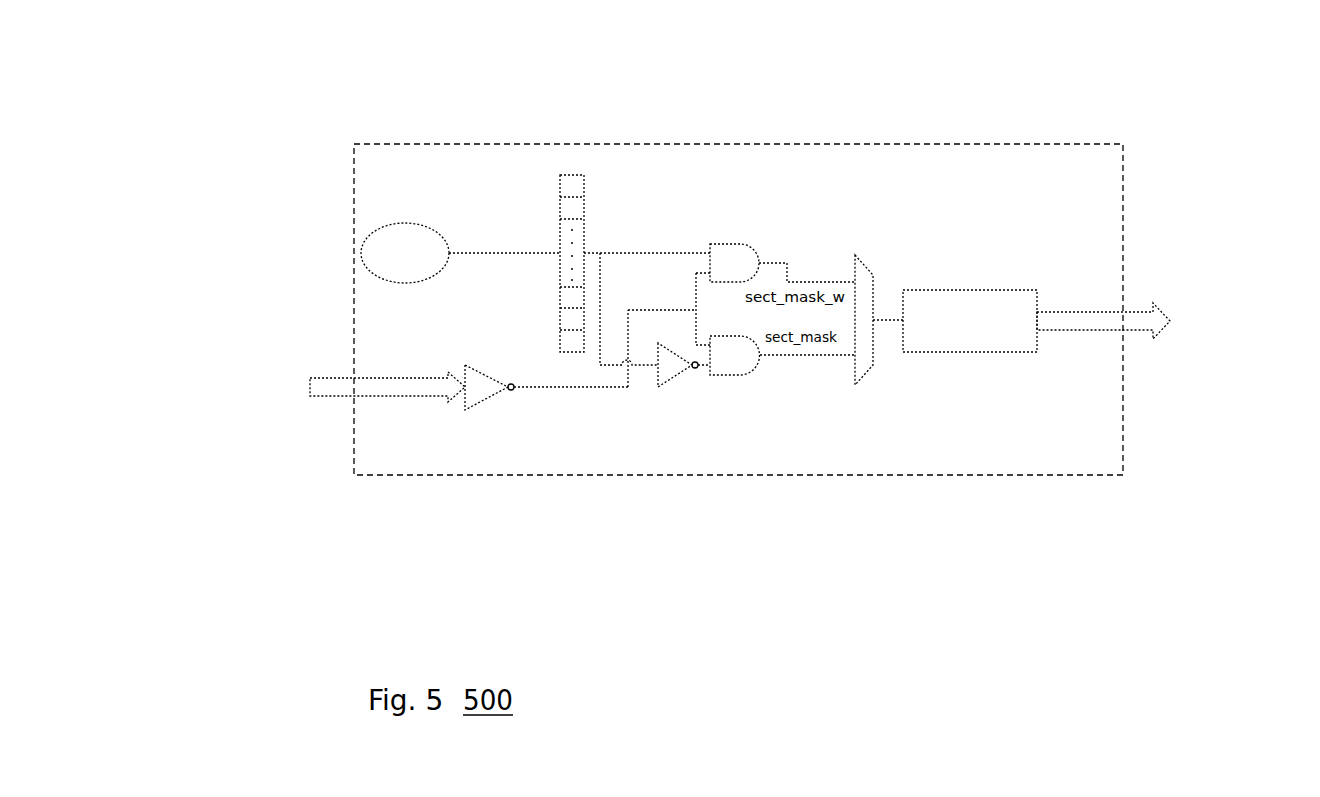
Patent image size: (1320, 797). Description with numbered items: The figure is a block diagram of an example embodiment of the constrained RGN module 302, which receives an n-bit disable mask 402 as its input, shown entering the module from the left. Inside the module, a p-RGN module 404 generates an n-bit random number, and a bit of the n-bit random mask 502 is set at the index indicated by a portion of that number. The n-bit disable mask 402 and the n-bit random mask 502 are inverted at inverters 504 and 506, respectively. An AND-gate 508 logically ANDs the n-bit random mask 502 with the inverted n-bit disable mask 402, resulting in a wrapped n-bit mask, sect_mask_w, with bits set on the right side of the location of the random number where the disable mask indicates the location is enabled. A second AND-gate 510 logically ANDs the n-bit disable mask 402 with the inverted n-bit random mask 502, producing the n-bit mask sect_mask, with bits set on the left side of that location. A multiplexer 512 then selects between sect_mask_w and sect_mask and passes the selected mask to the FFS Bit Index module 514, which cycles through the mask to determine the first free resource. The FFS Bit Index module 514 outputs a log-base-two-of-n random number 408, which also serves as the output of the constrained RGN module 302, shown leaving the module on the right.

The constrained RGN module 302 is at (683, 145).
The n-bit disable mask 402 is at (265, 444).
The p-RGN module 404 is at (408, 287).
The log2(n)-bit constrained RGN 408 is at (1250, 387).
The n-bit random mask 502 is at (683, 174).
The inverter 504 is at (560, 412).
The inverter 506 is at (718, 413).
The AND-gate 508 is at (805, 193).
The AND-gate 510 is at (762, 378).
The multiplexer 512 is at (875, 285).
The FFS Bit Index module 514 is at (978, 352).